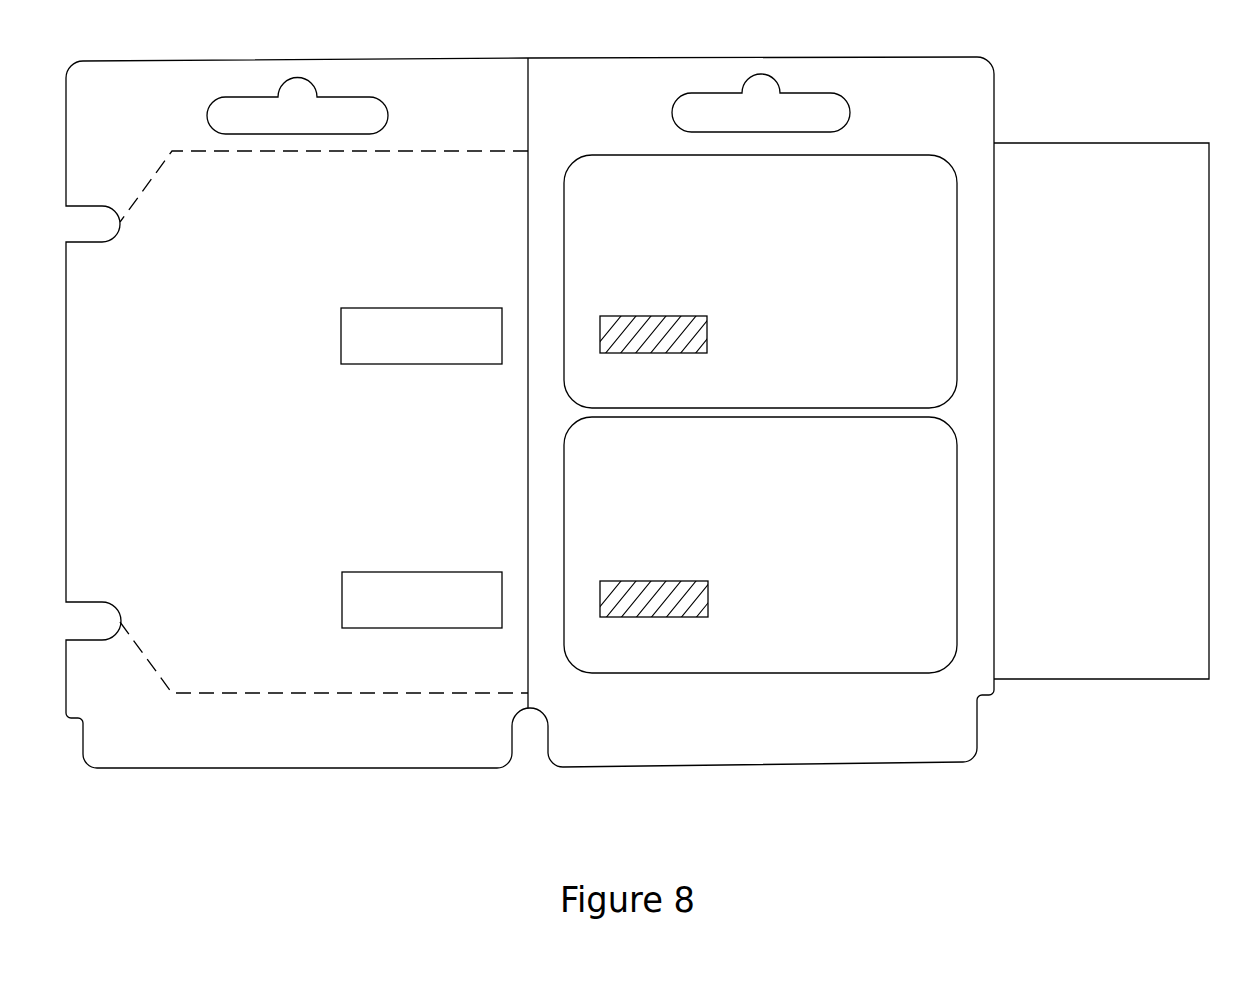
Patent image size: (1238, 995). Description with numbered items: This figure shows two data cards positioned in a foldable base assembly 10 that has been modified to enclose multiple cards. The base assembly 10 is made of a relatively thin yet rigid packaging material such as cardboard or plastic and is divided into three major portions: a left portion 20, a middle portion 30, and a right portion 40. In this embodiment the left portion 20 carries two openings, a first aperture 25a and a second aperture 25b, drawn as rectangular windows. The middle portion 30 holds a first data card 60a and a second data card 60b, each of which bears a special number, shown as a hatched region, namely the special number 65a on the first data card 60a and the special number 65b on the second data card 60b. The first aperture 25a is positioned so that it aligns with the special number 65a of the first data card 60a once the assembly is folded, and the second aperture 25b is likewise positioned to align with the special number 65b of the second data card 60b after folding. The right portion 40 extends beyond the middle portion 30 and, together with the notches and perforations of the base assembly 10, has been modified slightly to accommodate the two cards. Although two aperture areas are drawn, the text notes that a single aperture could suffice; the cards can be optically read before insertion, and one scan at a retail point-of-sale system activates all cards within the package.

The base assembly 10 is at (530, 388).
The left portion 20 is at (314, 413).
The first aperture 25a is at (421, 336).
The second aperture 25b is at (422, 600).
The middle portion 30 is at (761, 412).
The right portion 40 is at (1101, 411).
The first data card 60a is at (760, 281).
The second data card 60b is at (760, 545).
The special number 65a is at (666, 326).
The special number 65b is at (666, 589).